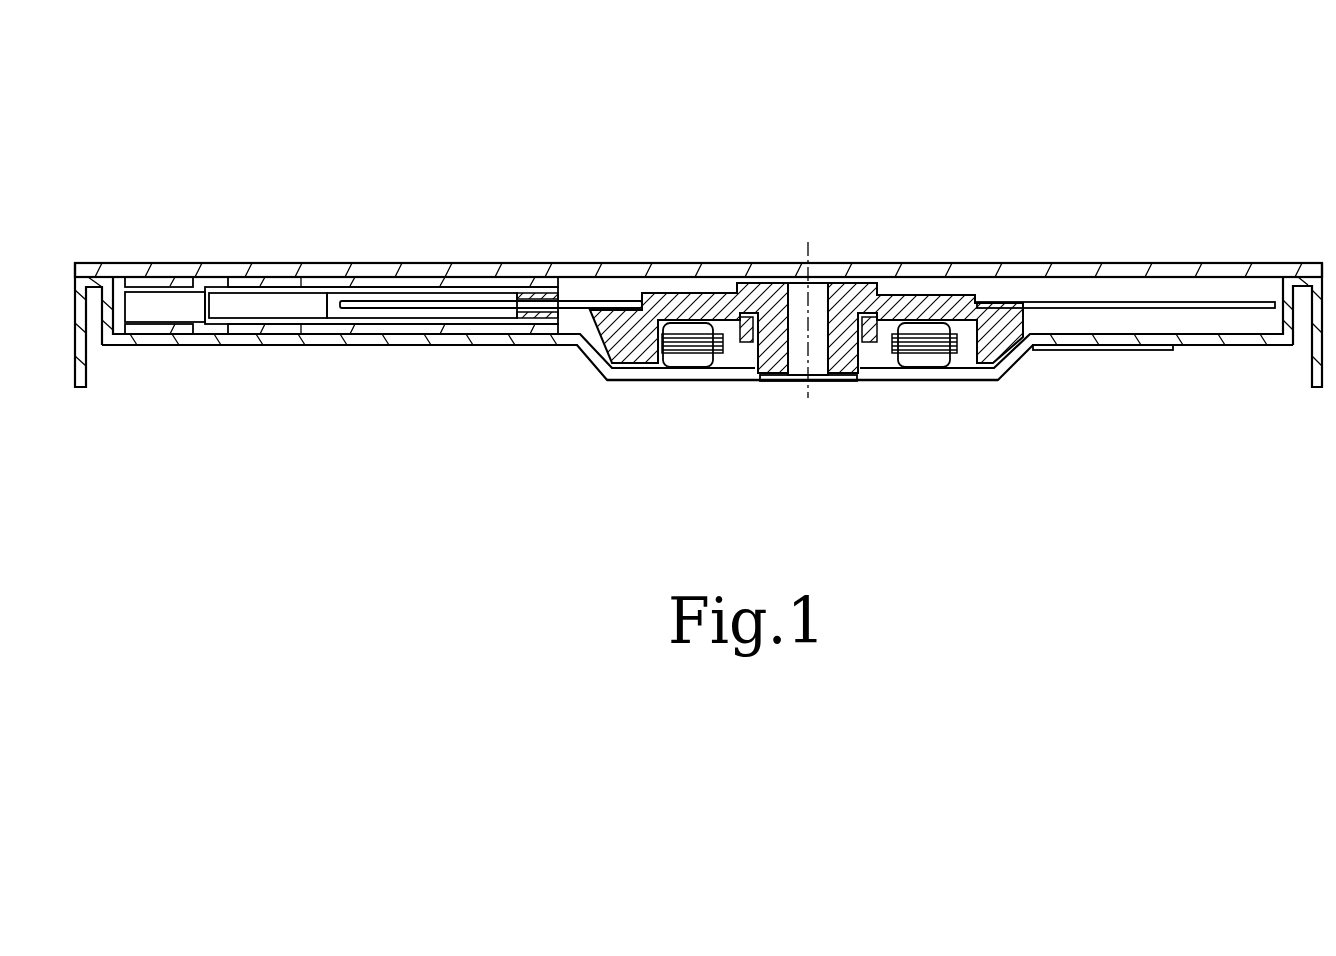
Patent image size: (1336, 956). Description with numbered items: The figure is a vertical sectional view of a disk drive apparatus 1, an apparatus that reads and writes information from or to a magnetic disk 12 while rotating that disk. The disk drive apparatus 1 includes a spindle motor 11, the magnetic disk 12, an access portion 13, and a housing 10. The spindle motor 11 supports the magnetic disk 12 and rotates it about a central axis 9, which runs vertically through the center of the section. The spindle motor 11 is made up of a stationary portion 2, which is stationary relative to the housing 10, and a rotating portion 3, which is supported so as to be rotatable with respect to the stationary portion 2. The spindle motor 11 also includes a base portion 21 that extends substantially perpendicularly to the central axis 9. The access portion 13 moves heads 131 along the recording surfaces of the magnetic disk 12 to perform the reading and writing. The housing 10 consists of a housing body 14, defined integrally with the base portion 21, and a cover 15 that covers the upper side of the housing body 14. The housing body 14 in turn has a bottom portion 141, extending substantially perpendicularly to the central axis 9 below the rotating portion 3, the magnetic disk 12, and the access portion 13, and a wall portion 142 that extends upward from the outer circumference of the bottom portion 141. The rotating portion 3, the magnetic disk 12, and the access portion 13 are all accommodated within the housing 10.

The disk drive apparatus 1 is at (698, 289).
The stationary portion 2 is at (806, 335).
The rotating portion 3 is at (913, 290).
The central axis 9 is at (808, 250).
The housing 10 is at (698, 241).
The spindle motor 11 is at (713, 296).
The magnetic disk 12 is at (412, 300).
The access portion 13 is at (364, 284).
The heads 131 is at (530, 292).
The housing body 14 is at (697, 258).
The bottom portion 141 is at (1170, 345).
The wall portion 142 is at (1287, 295).
The cover 15 is at (1087, 268).
The base portion 21 is at (883, 370).